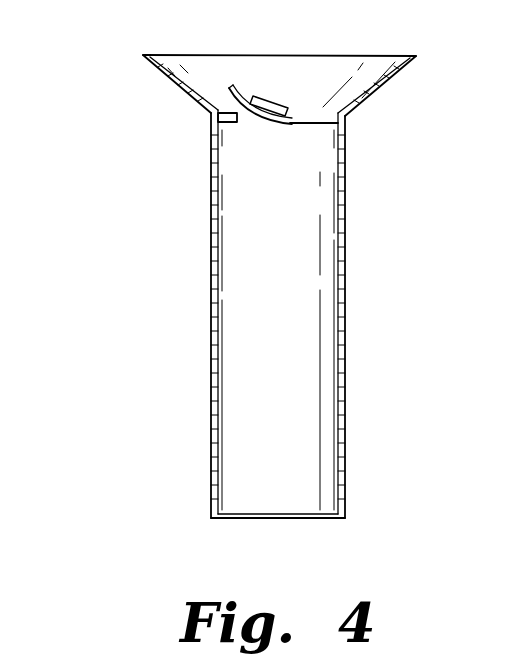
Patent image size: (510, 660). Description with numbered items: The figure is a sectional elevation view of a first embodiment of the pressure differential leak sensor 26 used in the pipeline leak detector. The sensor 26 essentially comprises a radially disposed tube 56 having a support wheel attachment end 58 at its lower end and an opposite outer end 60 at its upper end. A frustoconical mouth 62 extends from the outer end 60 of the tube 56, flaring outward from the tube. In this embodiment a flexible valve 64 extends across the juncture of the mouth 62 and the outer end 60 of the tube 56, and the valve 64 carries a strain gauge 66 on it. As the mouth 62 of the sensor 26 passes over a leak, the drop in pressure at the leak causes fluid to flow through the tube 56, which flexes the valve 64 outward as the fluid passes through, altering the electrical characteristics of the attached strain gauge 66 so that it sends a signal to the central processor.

The pressure differential leak sensor 26 is at (247, 266).
The radially disposed tube 56 is at (345, 266).
The support wheel attachment end 58 is at (211, 500).
The outer end 60 is at (212, 142).
The frustoconical mouth 62 is at (400, 73).
The flexible valve 64 is at (230, 88).
The strain gauge 66 is at (282, 98).